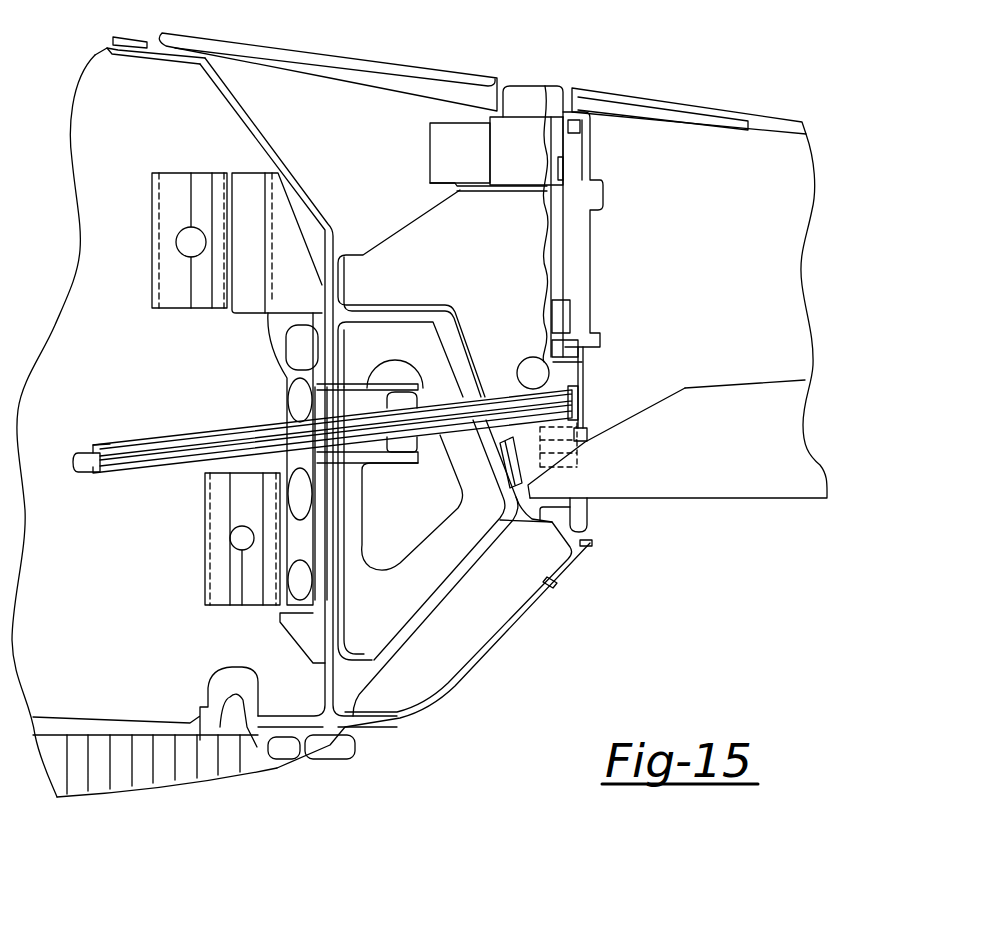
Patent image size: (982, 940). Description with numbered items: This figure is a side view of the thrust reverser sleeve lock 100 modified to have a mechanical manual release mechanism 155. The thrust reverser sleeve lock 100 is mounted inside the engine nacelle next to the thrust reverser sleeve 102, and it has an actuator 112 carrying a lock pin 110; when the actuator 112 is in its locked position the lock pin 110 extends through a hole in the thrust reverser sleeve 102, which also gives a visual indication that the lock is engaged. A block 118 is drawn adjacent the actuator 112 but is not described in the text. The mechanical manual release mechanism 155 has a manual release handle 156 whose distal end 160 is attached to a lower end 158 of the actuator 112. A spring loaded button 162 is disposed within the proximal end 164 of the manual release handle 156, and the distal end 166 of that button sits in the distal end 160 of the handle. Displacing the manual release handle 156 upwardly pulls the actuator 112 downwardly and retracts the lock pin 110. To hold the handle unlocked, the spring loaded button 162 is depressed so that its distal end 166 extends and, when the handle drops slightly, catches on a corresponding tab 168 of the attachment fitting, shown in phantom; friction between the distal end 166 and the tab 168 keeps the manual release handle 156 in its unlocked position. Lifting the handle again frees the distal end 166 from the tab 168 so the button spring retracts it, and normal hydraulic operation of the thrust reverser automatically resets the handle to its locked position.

The thrust reverser sleeve lock 100 is at (617, 248).
The thrust reverser sleeve 102 is at (667, 100).
The lock pin 110 is at (528, 85).
The actuator 112 is at (584, 150).
The drive block 118 is at (432, 148).
The mechanical manual release mechanism 155 is at (160, 500).
The manual release handle 156 is at (140, 445).
The lower end of actuator 158 is at (557, 363).
The distal end of manual release handle 160 is at (510, 378).
The spring loaded button 162 is at (75, 472).
The proximal end of manual release handle 164 is at (110, 444).
The distal end of spring loaded button 166 is at (597, 445).
The tab 168 is at (593, 443).